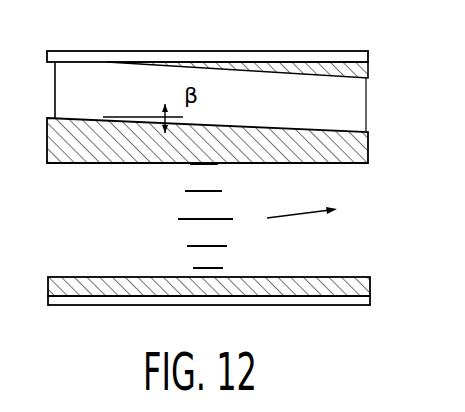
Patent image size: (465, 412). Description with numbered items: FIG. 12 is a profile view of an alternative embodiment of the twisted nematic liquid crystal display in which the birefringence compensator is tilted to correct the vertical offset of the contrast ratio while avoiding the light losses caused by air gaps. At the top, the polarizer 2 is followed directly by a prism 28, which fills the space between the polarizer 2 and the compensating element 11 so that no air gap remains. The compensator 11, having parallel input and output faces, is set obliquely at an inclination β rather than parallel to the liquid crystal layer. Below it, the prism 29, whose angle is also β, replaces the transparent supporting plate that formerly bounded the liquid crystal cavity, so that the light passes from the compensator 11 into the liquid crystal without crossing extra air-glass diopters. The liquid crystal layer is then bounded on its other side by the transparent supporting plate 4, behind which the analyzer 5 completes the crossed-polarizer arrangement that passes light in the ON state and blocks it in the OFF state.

The polarizer 2 is at (312, 51).
The prism 28 is at (368, 72).
The compensating element 11 is at (358, 108).
The prism 29 is at (368, 150).
The transparent supporting plate 4 is at (370, 284).
The analyzer 5 is at (371, 300).